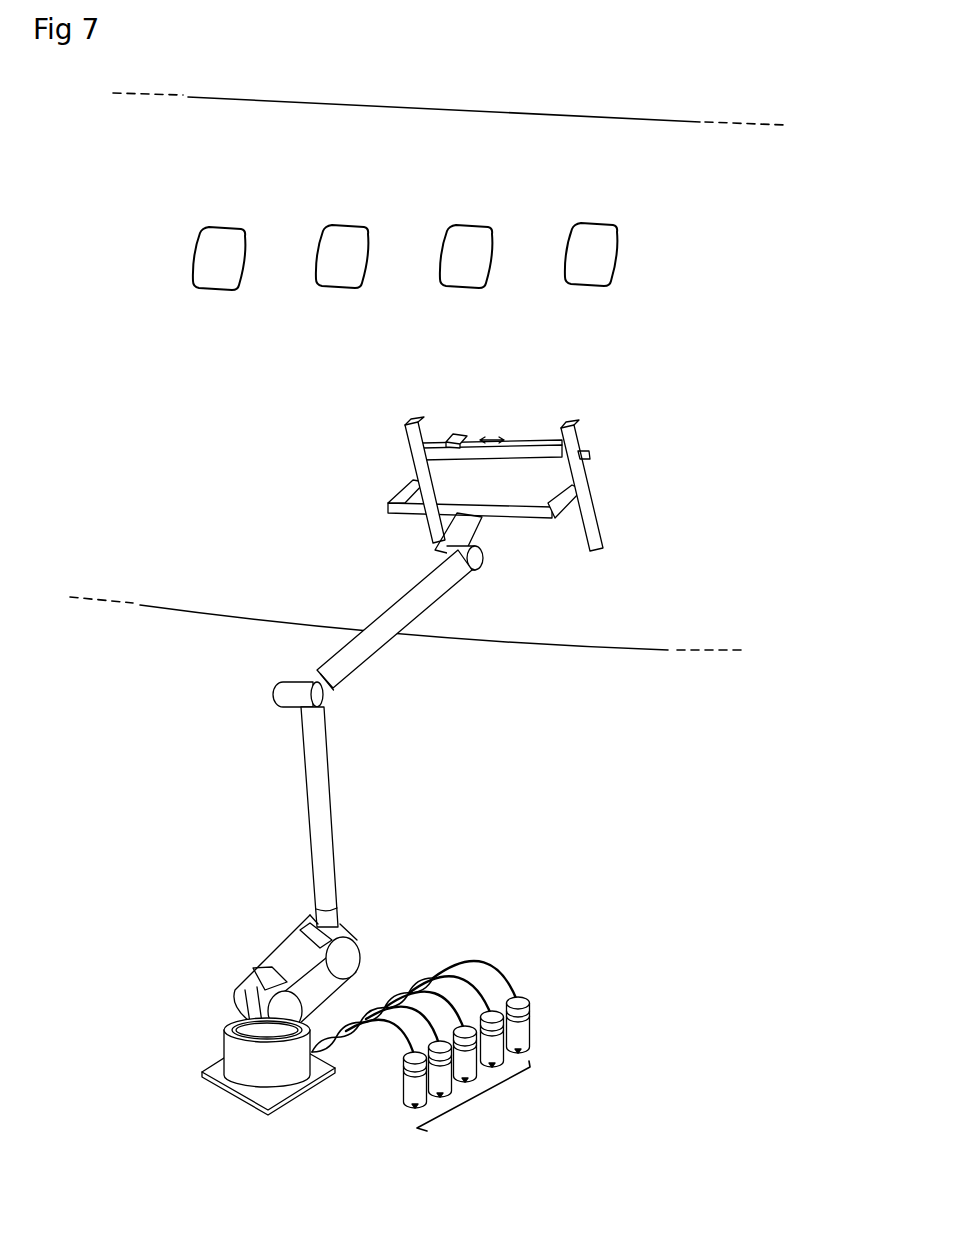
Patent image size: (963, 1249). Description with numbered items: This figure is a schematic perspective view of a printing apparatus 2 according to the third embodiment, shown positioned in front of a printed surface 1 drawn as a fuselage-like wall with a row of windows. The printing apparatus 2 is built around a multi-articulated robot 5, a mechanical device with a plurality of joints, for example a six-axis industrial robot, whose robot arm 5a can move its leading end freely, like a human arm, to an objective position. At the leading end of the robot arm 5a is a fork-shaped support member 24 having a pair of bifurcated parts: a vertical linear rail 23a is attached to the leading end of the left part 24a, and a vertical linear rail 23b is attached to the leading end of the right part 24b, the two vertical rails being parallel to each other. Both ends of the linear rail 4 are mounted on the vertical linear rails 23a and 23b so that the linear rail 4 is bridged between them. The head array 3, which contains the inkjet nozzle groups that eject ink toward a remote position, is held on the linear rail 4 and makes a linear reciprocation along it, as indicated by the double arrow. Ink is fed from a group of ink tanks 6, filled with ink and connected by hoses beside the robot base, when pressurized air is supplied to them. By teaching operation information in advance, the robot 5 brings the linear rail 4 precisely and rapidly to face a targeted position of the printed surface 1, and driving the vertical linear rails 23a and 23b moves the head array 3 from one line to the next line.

The printed surface 1 is at (628, 633).
The printing apparatus 2 is at (357, 814).
The head array 3 is at (467, 437).
The linear rail 4 is at (527, 445).
The multi-articulated robot 5 is at (288, 960).
The robot arm 5a is at (318, 755).
The ink tanks 6 is at (487, 1097).
The vertical linear rail 23a is at (407, 433).
The vertical linear rail 23b is at (575, 430).
The fork-shaped support member 24 is at (528, 513).
The left part 24a is at (400, 497).
The right part 24b is at (563, 513).